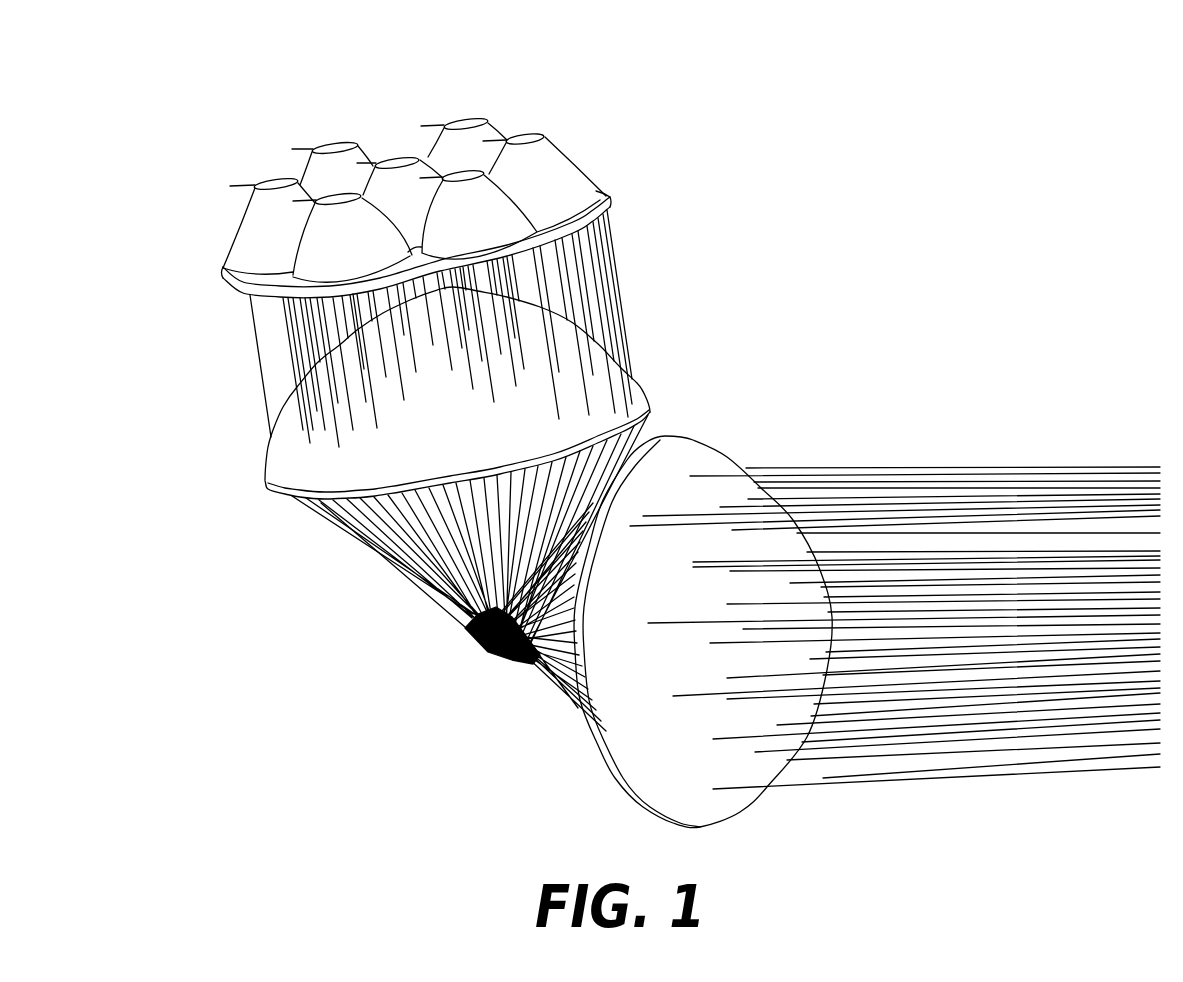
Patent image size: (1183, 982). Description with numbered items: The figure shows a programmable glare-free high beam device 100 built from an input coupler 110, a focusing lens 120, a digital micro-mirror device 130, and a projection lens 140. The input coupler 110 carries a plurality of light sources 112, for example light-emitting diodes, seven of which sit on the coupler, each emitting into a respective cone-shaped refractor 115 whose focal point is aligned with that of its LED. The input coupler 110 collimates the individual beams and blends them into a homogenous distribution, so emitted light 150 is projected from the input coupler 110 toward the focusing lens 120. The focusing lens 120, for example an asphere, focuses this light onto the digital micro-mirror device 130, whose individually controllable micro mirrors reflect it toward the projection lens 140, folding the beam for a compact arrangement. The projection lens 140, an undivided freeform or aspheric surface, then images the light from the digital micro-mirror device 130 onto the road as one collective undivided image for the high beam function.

The programmable glare-free high beam device 100 is at (246, 98).
The input coupler 110 is at (198, 286).
The light sources 112 is at (463, 121).
The cone-shaped refractors 115 is at (503, 218).
The focusing lens 120 is at (297, 475).
The digital micro-mirror device 130 is at (478, 662).
The projection lens 140 is at (618, 742).
The emitted light 150 is at (778, 446).